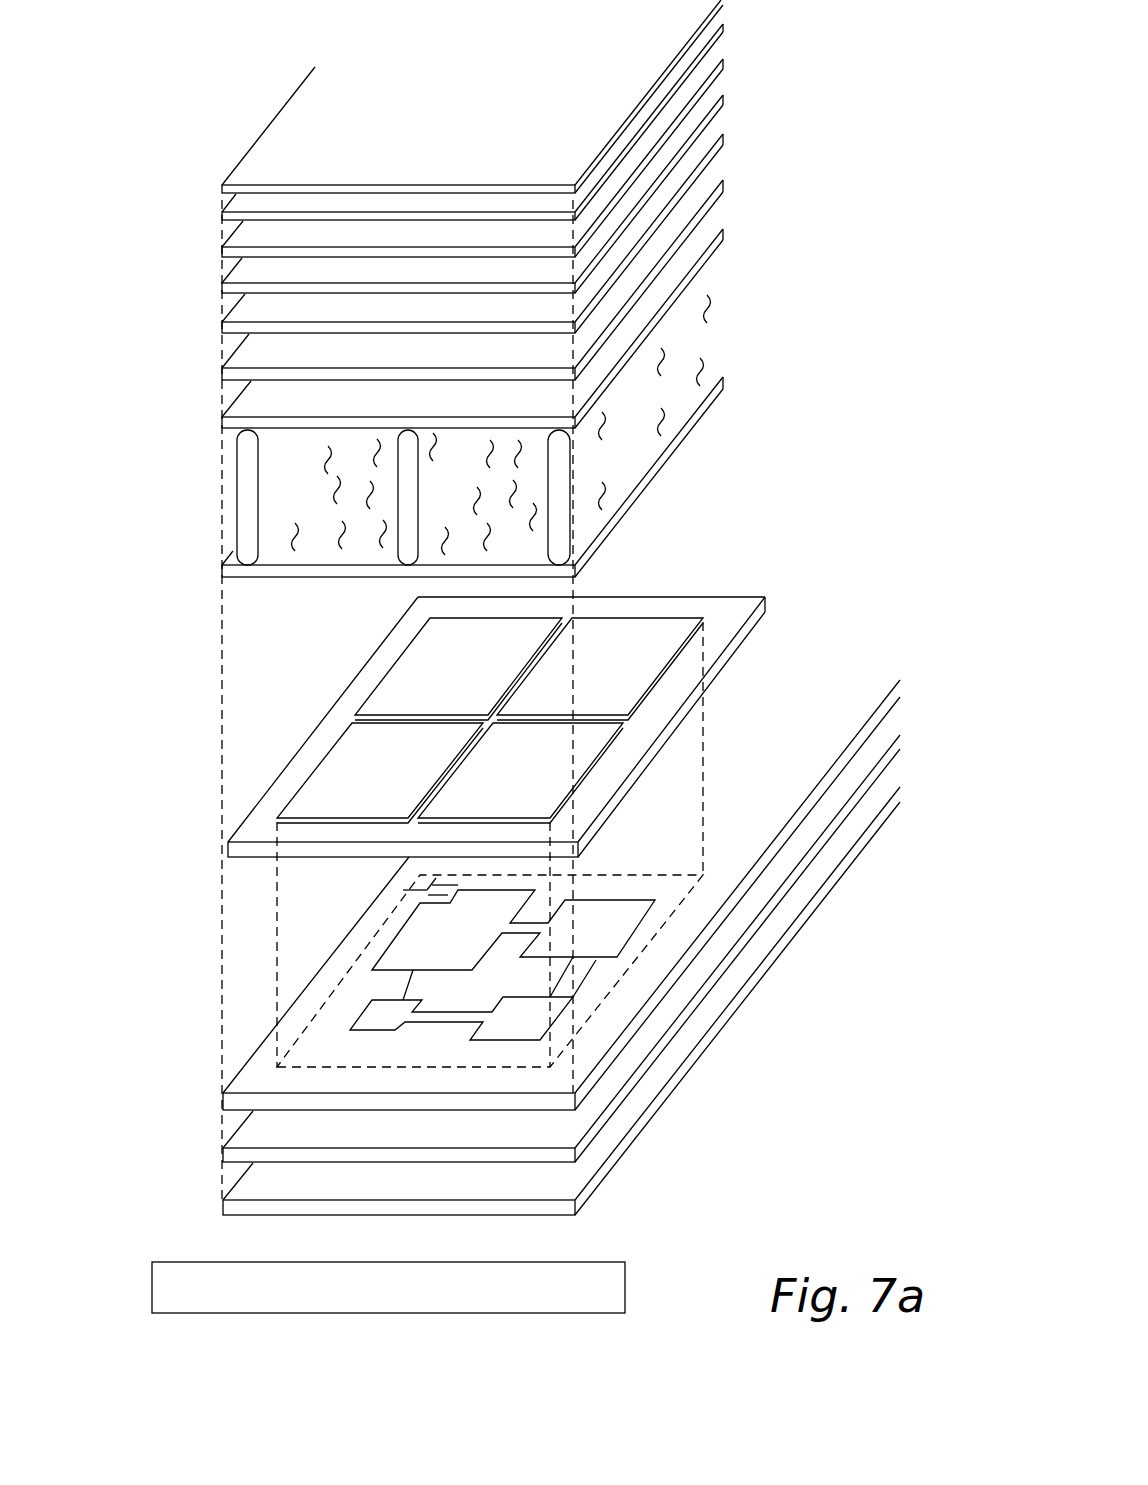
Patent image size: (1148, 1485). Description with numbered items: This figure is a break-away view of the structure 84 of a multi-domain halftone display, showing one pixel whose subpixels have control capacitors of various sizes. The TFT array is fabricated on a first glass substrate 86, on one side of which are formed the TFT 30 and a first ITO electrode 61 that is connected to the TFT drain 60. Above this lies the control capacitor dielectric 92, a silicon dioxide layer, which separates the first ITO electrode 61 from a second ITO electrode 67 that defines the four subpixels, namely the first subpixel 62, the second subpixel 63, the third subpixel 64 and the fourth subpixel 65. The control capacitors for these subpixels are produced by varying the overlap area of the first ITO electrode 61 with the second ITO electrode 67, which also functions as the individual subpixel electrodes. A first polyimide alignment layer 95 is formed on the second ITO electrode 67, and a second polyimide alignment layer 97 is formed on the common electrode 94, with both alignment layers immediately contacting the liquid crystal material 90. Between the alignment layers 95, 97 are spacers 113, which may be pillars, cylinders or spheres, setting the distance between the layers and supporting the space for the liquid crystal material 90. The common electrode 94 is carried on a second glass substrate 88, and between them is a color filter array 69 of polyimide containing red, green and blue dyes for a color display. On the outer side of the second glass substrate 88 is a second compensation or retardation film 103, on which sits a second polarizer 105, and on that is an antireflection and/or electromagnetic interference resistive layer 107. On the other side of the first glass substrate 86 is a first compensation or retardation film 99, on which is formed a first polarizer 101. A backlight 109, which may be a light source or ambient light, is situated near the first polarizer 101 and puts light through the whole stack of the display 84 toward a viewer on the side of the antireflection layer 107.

The antireflection and/or electromagnetic interference resistive layer 107 is at (233, 162).
The second polarizer 105 is at (222, 214).
The second compensation or retardation film 103 is at (222, 249).
The second glass substrate 88 is at (222, 285).
The color filter array 69 is at (222, 324).
The common electrode 94 is at (222, 370).
The second polyimide alignment layer 97 is at (222, 419).
The first polyimide alignment layer 95 is at (222, 570).
The spacers 113 is at (332, 428).
The liquid crystal material 90 is at (338, 491).
The structure of a multi-domain halftone display 84 is at (790, 424).
The control capacitor dielectric 92 is at (723, 667).
The subpixel #1 62 is at (486, 645).
The subpixel #2 63 is at (638, 645).
The subpixel #3 64 is at (553, 751).
The subpixel #4 65 is at (412, 751).
The second ITO electrode 67 is at (467, 620).
The first ITO electrode 61 is at (493, 915).
The TFT 30 is at (447, 885).
The TFT drain 60 is at (463, 858).
The first glass substrate 86 is at (223, 1097).
The first compensation or retardation film 99 is at (223, 1150).
The first polarizer 101 is at (223, 1201).
The backlight 109 is at (625, 1282).